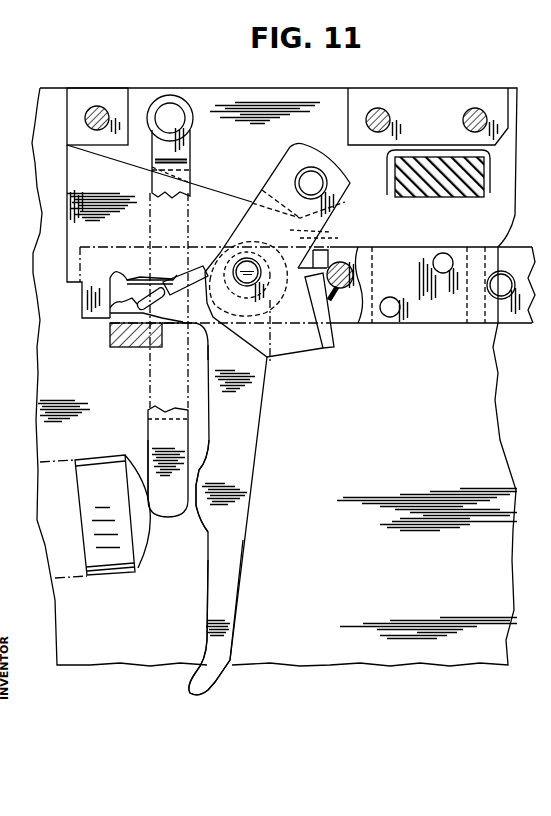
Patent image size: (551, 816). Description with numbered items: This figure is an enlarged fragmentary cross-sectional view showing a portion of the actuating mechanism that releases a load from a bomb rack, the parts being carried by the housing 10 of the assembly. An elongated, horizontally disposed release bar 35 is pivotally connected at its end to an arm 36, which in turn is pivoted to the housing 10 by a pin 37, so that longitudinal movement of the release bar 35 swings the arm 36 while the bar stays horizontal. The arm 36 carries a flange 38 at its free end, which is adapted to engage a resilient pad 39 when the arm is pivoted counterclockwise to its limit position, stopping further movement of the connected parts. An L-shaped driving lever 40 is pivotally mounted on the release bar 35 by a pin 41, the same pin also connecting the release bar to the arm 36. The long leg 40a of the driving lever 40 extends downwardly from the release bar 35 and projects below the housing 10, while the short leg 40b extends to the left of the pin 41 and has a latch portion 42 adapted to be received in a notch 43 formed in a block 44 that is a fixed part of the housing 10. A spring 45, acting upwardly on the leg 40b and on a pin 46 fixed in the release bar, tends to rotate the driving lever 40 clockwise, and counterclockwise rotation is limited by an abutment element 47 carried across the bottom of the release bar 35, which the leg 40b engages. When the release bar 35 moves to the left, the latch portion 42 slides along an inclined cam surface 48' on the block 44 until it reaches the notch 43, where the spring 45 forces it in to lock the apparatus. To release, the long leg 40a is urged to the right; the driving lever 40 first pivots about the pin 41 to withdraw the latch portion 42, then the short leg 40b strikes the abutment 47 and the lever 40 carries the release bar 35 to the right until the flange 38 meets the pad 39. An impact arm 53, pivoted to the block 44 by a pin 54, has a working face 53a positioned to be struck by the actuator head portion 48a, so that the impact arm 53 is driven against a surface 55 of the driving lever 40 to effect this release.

The housing 10 is at (452, 642).
The release bar 35 is at (450, 312).
The arm 36 is at (248, 244).
The pin 37 is at (298, 184).
The flange 38 is at (336, 338).
The resilient pad 39 is at (452, 188).
The driving lever 40 is at (244, 438).
The long leg 40a is at (238, 562).
The short leg 40b is at (178, 330).
The pin 41 is at (247, 287).
The latch portion 42 is at (112, 280).
The notch 43 is at (130, 268).
The block 44 is at (82, 180).
The spring 45 is at (105, 320).
The pin 46 is at (346, 266).
The abutment element 47 is at (124, 350).
The inclined cam surface 48' is at (330, 221).
The head portion 48a is at (114, 570).
The impact arm 53 is at (150, 426).
The working face 53a is at (146, 472).
The pin 54 is at (170, 113).
The surface 55 is at (198, 510).